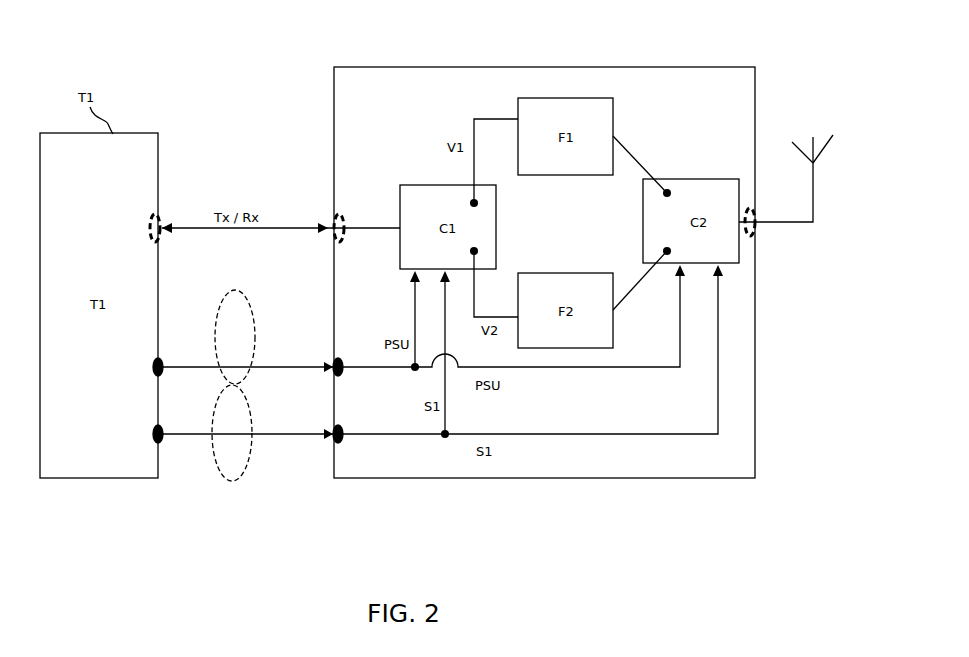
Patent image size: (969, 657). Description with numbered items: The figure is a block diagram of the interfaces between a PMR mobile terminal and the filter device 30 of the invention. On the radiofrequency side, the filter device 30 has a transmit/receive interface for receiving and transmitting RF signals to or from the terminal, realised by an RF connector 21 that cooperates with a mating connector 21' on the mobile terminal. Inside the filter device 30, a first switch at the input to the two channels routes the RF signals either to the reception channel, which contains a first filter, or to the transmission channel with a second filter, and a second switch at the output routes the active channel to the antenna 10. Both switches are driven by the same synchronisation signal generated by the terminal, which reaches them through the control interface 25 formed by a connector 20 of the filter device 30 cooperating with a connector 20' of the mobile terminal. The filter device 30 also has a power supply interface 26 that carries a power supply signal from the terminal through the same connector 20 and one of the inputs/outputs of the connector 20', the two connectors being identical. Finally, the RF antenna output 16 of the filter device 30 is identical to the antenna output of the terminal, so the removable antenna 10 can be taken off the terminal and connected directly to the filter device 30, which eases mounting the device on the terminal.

The filter device 30 is at (391, 54).
The RF connector 21 is at (321, 214).
The connector of the mobile terminal 21' is at (126, 232).
The connector of the filter device 20 is at (321, 416).
The connector of the mobile terminal 20' is at (135, 409).
The power supply interface 26 is at (257, 321).
The control interface 25 is at (248, 468).
The antenna 10 is at (816, 196).
The RF antenna output 16 is at (755, 236).